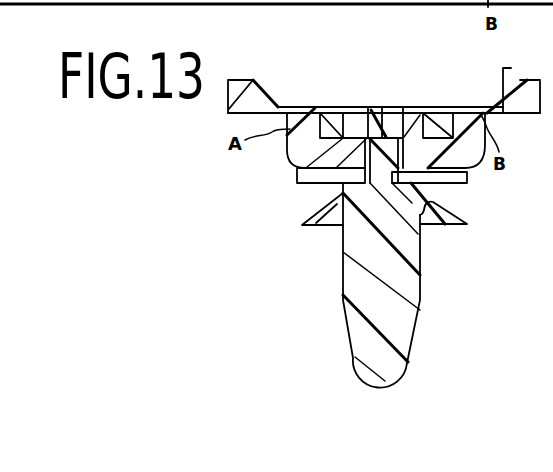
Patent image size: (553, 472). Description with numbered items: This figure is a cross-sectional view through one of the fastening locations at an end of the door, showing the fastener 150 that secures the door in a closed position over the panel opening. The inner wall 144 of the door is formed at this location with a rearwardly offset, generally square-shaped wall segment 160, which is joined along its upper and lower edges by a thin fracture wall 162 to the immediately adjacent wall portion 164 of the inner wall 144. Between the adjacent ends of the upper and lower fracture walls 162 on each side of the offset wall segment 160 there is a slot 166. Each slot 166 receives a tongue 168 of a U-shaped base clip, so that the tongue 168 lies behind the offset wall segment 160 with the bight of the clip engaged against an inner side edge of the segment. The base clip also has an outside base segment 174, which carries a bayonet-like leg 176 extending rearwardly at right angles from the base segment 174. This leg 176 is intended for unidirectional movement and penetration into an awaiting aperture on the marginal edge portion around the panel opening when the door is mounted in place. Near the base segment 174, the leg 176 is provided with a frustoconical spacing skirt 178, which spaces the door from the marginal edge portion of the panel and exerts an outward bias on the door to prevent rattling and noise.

The inner wall 144 is at (514, 115).
The fastener 150 is at (378, 207).
The offset wall segment 160 is at (405, 136).
The fracture wall 162 is at (281, 105).
The wall portion 164 is at (232, 86).
The slot 166 is at (362, 127).
The tongue 168 is at (331, 110).
The outside base segment 174 is at (308, 183).
The bayonet-like leg 176 is at (343, 321).
The frustoconical spacing skirt 178 is at (438, 207).